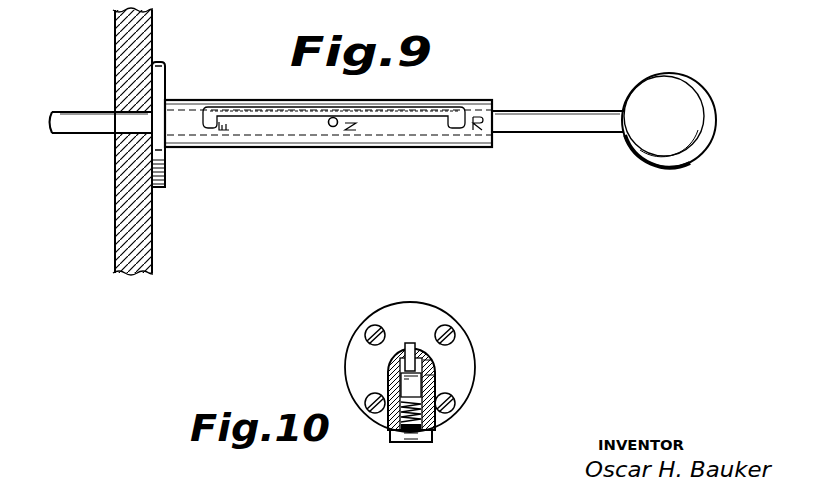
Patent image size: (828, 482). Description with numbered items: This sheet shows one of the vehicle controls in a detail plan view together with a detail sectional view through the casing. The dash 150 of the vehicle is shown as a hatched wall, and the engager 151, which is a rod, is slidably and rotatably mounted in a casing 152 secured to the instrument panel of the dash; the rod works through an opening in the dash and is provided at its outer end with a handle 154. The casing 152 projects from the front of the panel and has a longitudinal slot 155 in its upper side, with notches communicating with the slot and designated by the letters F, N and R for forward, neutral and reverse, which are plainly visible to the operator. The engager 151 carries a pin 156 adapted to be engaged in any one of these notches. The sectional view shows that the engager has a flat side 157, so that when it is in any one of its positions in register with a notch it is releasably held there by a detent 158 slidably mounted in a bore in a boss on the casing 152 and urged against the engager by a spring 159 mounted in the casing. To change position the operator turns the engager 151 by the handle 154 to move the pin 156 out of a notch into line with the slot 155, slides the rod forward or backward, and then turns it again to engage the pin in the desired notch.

In FIG. 9, the dash 150 is at (155, 258).
In FIG. 9, the engager 151 is at (552, 122).
In FIG. 9, the casing 152 is at (417, 127).
In FIG. 10, the casing 152 is at (428, 376).
In FIG. 9, the handle 154 is at (647, 98).
In FIG. 9, the longitudinal slot 155 is at (253, 113).
In FIG. 10, the longitudinal slot 155 is at (430, 347).
In FIG. 9, the pin 156 is at (328, 127).
In FIG. 10, the pin 156 is at (412, 334).
In FIG. 10, the flat side 157 is at (390, 372).
In FIG. 10, the detent 158 is at (395, 388).
In FIG. 10, the spring 159 is at (395, 413).